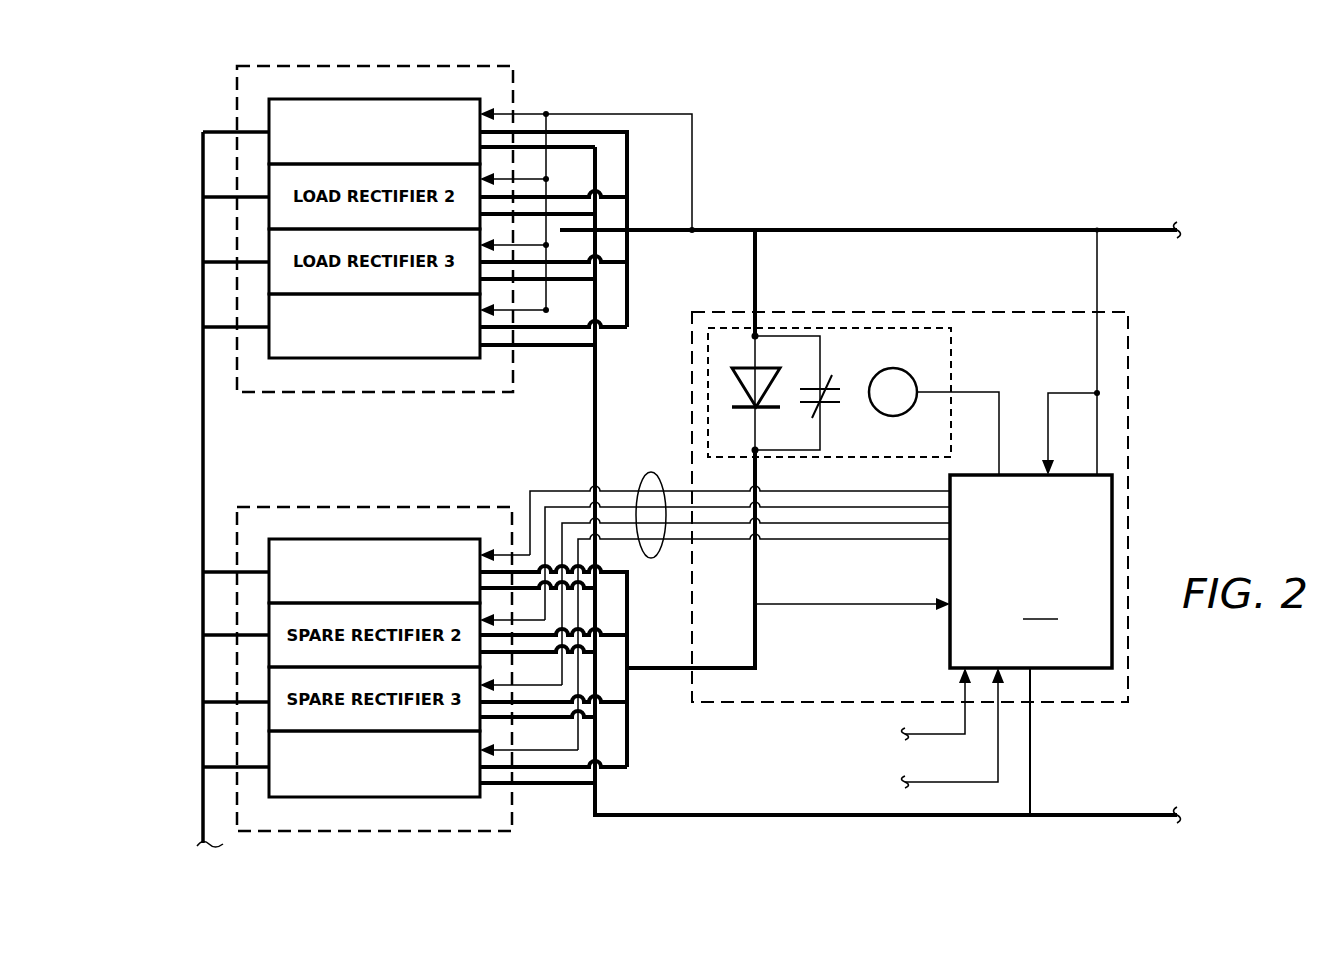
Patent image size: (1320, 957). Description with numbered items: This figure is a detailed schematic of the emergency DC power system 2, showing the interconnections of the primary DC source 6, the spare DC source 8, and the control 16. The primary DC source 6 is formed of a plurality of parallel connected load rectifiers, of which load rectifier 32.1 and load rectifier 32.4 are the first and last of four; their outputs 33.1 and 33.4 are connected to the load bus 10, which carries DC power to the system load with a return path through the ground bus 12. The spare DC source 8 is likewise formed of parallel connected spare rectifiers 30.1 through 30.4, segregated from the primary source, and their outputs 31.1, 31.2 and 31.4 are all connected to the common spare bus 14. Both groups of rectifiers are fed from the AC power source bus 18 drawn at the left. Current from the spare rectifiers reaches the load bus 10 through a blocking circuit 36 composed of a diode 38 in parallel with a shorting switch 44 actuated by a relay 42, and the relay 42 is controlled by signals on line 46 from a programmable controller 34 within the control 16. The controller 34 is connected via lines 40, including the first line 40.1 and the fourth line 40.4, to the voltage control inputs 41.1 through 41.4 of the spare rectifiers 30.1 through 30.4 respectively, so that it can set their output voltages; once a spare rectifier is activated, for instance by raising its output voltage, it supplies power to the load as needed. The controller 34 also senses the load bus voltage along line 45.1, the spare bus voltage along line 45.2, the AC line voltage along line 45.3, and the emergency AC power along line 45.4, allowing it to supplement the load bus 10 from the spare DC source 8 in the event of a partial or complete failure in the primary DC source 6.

The system 2 is at (808, 144).
The primary DC source 6 is at (513, 79).
The spare DC source 8 is at (385, 507).
The load bus 10 is at (840, 230).
The ground bus 12 is at (595, 390).
The spare bus 14 is at (662, 670).
The control 16 is at (1100, 703).
The AC power source bus 18 is at (205, 452).
The spare rectifier 30.1 is at (351, 539).
The spare rectifier 30.4 is at (372, 798).
The spare rectifier output 31.1 is at (520, 570).
The spare rectifier output 31.2 is at (626, 630).
The spare rectifier output 31.4 is at (552, 783).
The load rectifier 32.1 is at (313, 99).
The load rectifier 32.4 is at (358, 359).
The load rectifier output 33.1 is at (590, 132).
The load rectifier output 33.4 is at (530, 346).
The programmable controller 34 is at (1031, 645).
The blocking circuit 36 is at (951, 352).
The diode 38 is at (740, 386).
The lines 40 is at (654, 474).
The line 40.1 is at (905, 491).
The line 40.4 is at (892, 539).
The voltage control input 41.1 is at (503, 555).
The voltage control input 41.4 is at (500, 750).
The relay 42 is at (898, 417).
The shorting switch 44 is at (833, 386).
The line 45.1 is at (1065, 393).
The line 45.2 is at (883, 604).
The line 45.3 is at (915, 782).
The line 45.4 is at (915, 734).
The line 46 is at (999, 440).